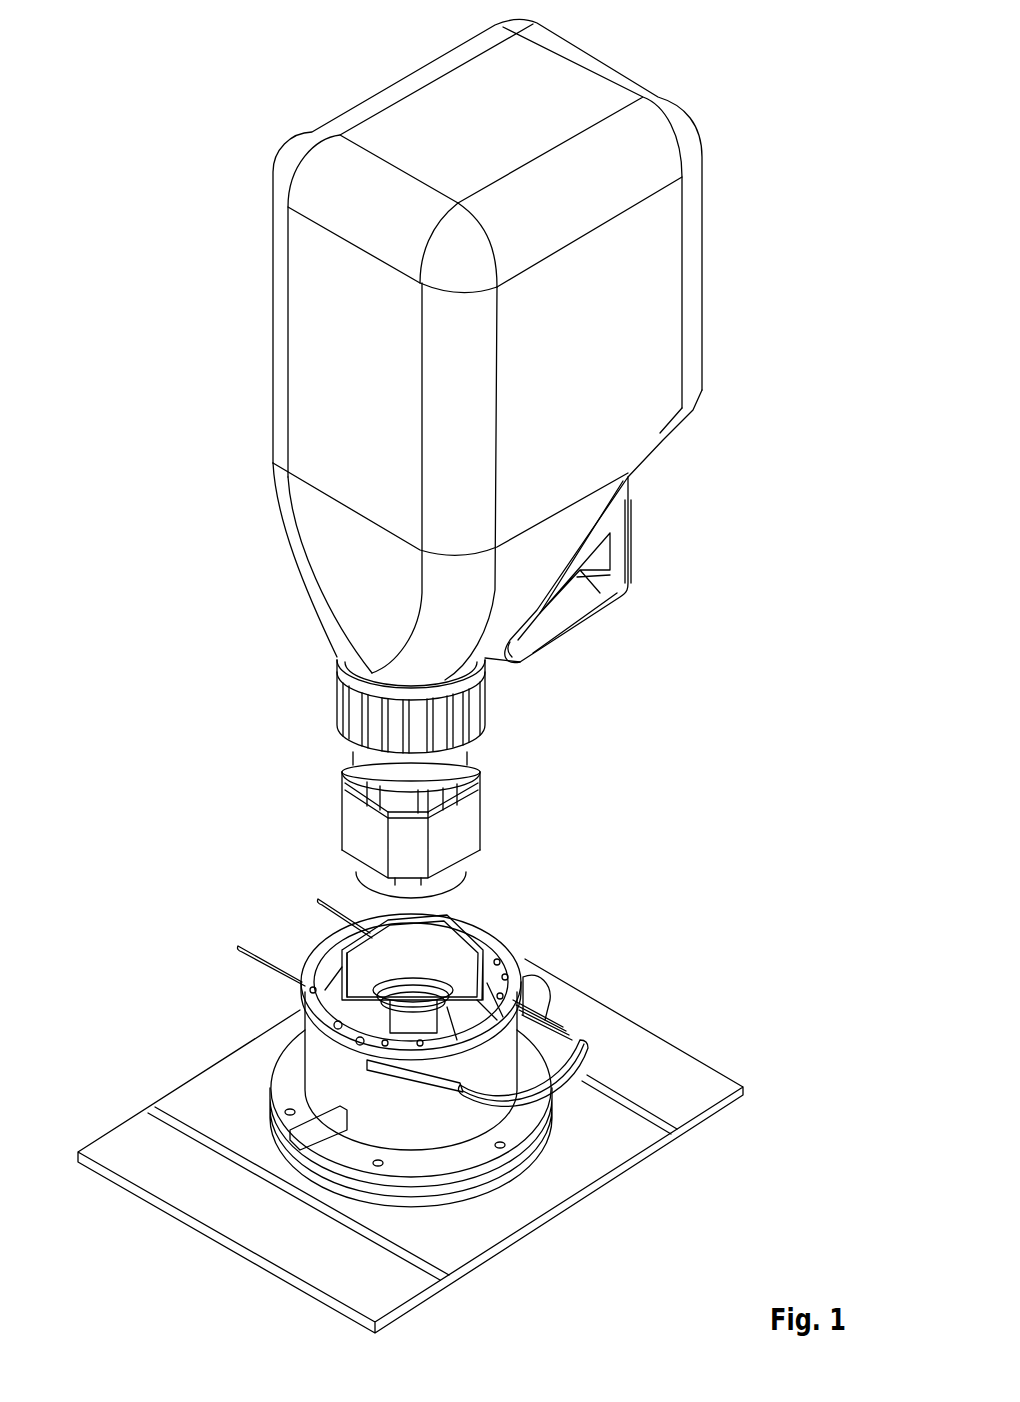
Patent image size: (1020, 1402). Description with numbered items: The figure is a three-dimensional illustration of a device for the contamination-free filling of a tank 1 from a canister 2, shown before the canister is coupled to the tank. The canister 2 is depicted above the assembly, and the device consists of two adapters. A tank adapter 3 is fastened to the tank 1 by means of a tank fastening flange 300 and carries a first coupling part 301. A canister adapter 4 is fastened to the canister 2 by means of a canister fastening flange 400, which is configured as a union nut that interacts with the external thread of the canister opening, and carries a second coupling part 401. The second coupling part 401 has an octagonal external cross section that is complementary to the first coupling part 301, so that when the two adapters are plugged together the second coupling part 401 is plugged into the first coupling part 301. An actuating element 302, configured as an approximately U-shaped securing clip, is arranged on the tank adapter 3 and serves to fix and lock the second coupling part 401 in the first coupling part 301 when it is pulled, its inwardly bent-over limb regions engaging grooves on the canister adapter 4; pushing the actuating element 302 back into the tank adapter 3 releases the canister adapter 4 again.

The tank 1 is at (213, 1082).
The canister 2 is at (318, 327).
The tank adapter 3 is at (445, 1053).
The canister adapter 4 is at (394, 764).
The tank fastening flange 300 is at (440, 1150).
The first coupling part 301 is at (405, 942).
The actuating element 302 is at (563, 1053).
The canister fastening flange 400 is at (353, 702).
The second coupling part 401 is at (450, 828).